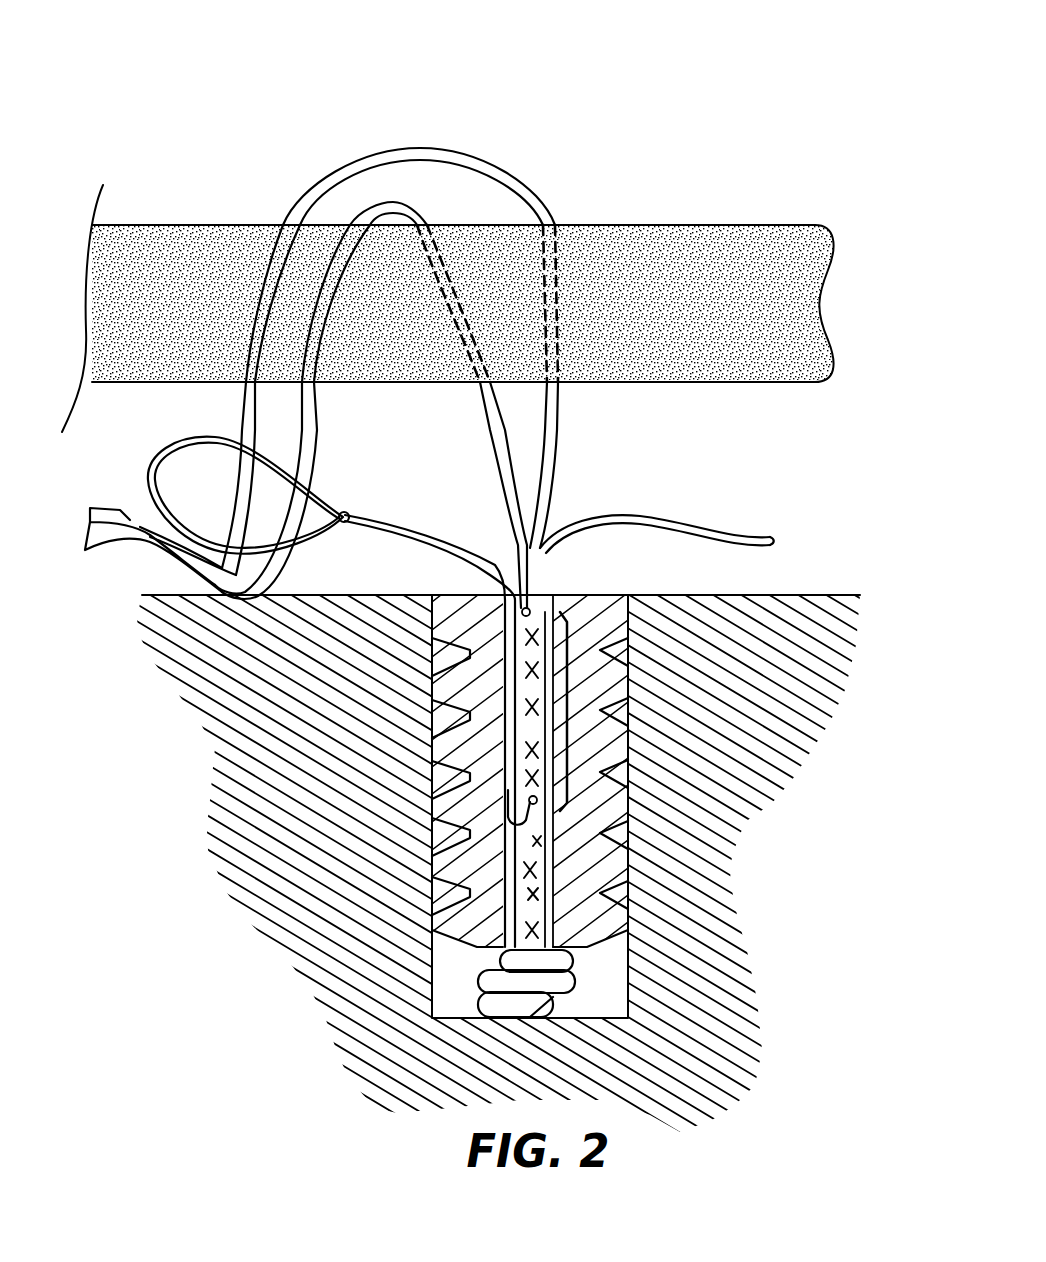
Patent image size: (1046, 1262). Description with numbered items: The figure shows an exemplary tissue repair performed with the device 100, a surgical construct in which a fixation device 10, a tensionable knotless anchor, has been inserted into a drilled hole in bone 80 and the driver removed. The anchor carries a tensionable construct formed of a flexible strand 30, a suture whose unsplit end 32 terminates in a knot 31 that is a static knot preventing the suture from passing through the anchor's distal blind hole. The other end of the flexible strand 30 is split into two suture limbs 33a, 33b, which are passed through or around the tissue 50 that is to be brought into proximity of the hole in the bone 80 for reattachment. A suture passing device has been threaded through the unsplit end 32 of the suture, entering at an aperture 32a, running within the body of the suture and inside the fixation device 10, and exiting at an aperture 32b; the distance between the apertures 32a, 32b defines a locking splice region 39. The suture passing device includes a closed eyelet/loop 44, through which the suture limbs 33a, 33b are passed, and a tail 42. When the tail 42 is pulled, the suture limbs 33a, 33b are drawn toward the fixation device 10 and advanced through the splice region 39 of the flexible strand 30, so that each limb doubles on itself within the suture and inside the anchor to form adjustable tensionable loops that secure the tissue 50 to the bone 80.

The device 100 is at (238, 48).
The fixation device 10 is at (593, 863).
The flexible strand 30 is at (537, 915).
The knot 31 is at (492, 1005).
The unsplit end 32 is at (530, 850).
The aperture 32a is at (540, 806).
The aperture 32b is at (540, 546).
The suture limb 33a is at (138, 523).
The suture limb 33b is at (117, 513).
The splice region 39 is at (572, 702).
The tail 42 is at (703, 532).
The eyelet/loop 44 is at (297, 519).
The tissue 50 is at (615, 313).
The bone 80 is at (691, 746).